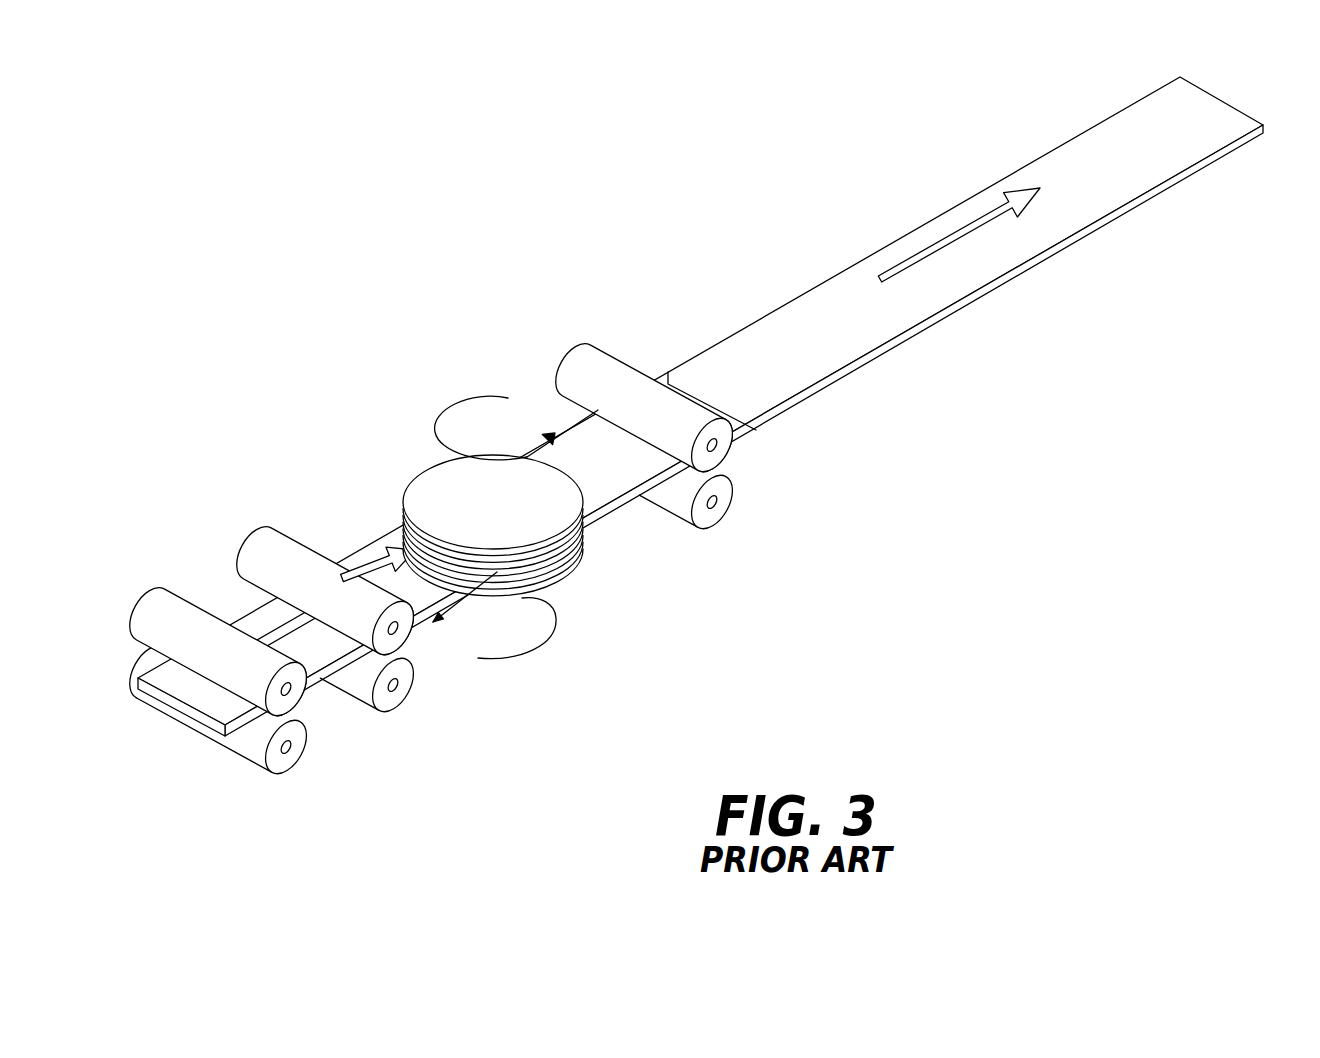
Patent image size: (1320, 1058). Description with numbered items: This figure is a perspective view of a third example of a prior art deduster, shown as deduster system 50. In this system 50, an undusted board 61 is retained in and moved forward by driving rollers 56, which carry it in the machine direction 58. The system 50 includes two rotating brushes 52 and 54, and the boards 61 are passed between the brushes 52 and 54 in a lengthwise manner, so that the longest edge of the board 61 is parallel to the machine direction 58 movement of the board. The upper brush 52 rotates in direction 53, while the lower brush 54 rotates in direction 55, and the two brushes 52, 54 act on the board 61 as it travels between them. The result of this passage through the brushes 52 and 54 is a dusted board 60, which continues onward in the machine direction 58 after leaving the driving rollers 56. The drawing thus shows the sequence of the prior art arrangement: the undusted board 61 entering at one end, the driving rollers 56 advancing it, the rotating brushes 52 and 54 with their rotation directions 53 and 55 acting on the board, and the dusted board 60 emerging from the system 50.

The deduster system 50 is at (692, 448).
The rotating brush 52 is at (448, 477).
The rotation direction 53 is at (468, 397).
The rotating brush 54 is at (582, 580).
The rotation direction 55 is at (525, 657).
The driving rollers 56 is at (720, 457).
The machine direction 58 is at (940, 240).
The dusted board 60 is at (1110, 180).
The undusted board 61 is at (262, 618).